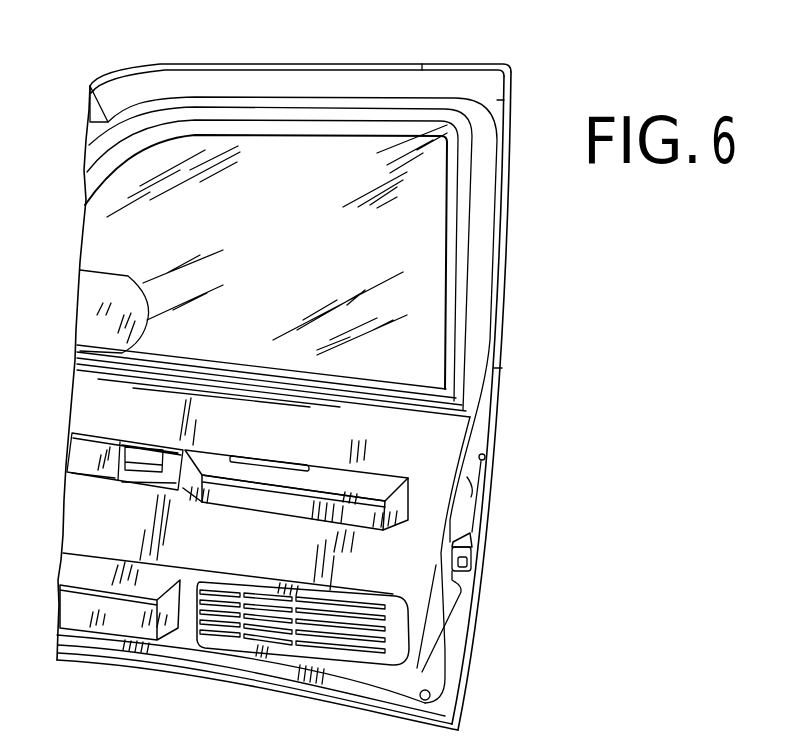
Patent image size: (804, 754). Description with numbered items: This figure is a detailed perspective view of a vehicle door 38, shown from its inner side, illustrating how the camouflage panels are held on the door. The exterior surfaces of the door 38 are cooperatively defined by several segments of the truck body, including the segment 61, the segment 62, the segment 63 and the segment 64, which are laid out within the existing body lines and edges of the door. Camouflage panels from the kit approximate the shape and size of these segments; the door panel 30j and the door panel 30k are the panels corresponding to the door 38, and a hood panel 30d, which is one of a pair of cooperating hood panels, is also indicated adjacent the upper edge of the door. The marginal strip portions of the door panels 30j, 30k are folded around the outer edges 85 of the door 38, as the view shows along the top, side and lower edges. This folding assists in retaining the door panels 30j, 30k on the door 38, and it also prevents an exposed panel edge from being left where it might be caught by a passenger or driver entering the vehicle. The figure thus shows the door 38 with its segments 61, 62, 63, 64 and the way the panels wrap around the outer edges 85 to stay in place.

The hood panel 30d is at (267, 70).
The segment 63 is at (347, 66).
The outer edges 85 is at (453, 62).
The vehicle door 38 is at (487, 102).
The segment 64 is at (97, 121).
The segment 62 is at (510, 250).
The door panel 30k is at (506, 335).
The segment 61 is at (490, 502).
The door panel 30j is at (478, 612).